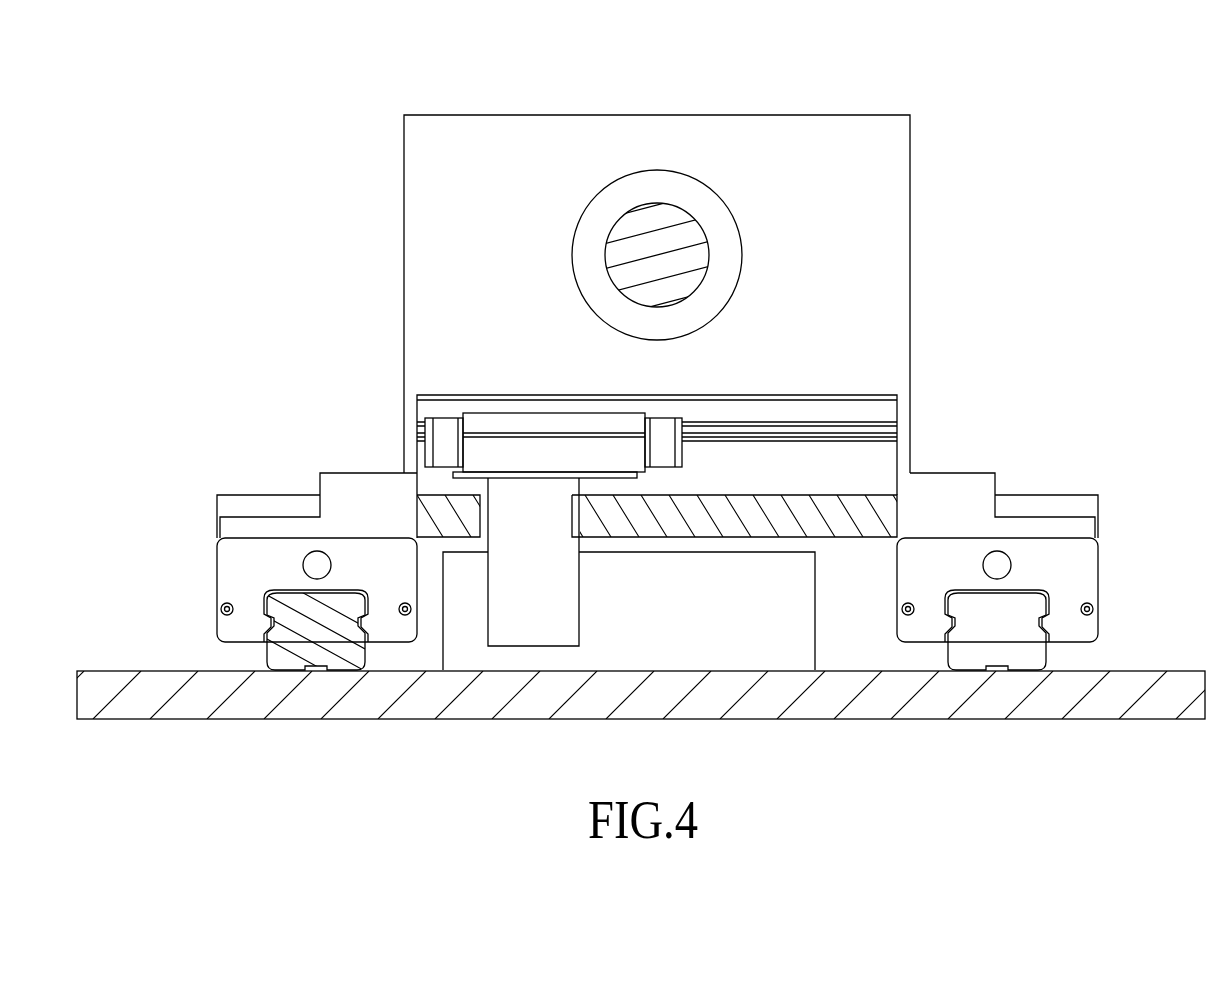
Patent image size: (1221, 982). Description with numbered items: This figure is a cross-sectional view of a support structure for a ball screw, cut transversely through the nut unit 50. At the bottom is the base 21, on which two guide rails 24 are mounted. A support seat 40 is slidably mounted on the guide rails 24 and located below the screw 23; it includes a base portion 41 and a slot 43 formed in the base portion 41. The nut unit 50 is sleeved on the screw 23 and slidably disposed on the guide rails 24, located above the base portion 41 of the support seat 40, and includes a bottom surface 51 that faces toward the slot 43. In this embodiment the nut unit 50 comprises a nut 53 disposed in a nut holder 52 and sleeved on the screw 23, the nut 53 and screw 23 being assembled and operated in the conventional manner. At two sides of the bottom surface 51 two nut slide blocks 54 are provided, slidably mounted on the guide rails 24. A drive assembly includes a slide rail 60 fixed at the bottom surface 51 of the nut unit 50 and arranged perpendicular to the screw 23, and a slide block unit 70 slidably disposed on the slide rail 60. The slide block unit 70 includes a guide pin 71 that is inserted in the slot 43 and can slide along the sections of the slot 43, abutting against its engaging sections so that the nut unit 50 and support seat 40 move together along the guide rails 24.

The base 21 is at (155, 680).
The screw 23 is at (685, 232).
The guide rails 24 is at (1012, 615).
The support seat 40 is at (657, 548).
The base portion 41 is at (838, 522).
The slot 43 is at (485, 530).
The nut unit 50 is at (672, 290).
The bottom surface 51 is at (835, 395).
The nut holder 52 is at (878, 128).
The nut 53 is at (603, 213).
The nut slide blocks 54 is at (232, 568).
The slide rail 60 is at (762, 432).
The slide block unit 70 is at (507, 412).
The guide pin 71 is at (568, 593).